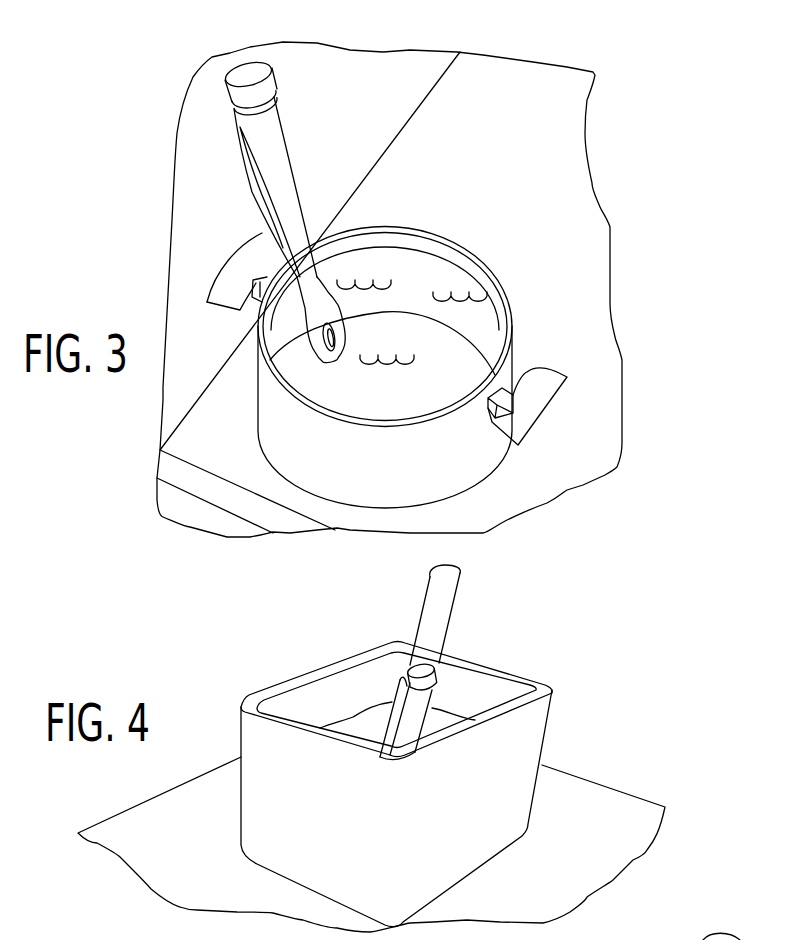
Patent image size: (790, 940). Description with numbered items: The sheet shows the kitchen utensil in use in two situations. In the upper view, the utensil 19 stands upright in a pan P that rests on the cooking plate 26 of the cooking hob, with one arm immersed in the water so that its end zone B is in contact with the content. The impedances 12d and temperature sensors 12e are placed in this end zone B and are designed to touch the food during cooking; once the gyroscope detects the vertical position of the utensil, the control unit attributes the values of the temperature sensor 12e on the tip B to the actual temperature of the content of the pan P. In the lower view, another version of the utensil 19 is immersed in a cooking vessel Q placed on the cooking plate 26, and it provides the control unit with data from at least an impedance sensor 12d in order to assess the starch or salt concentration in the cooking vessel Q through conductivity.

In FIG. 3, the ladle 19 is at (364, 207).
In FIG. 4, the ladle 19 is at (491, 616).
In FIG. 3, the cooking plate 26 is at (610, 162).
In FIG. 4, the cooking plate 26 is at (569, 763).
In FIG. 3, the pan P is at (387, 405).
In FIG. 4, the cooking vessel Q is at (520, 673).
In FIG. 3, the end zone B is at (308, 305).
In FIG. 3, the impedance 12d is at (377, 342).
In FIG. 3, the temperature sensor 12e is at (323, 362).